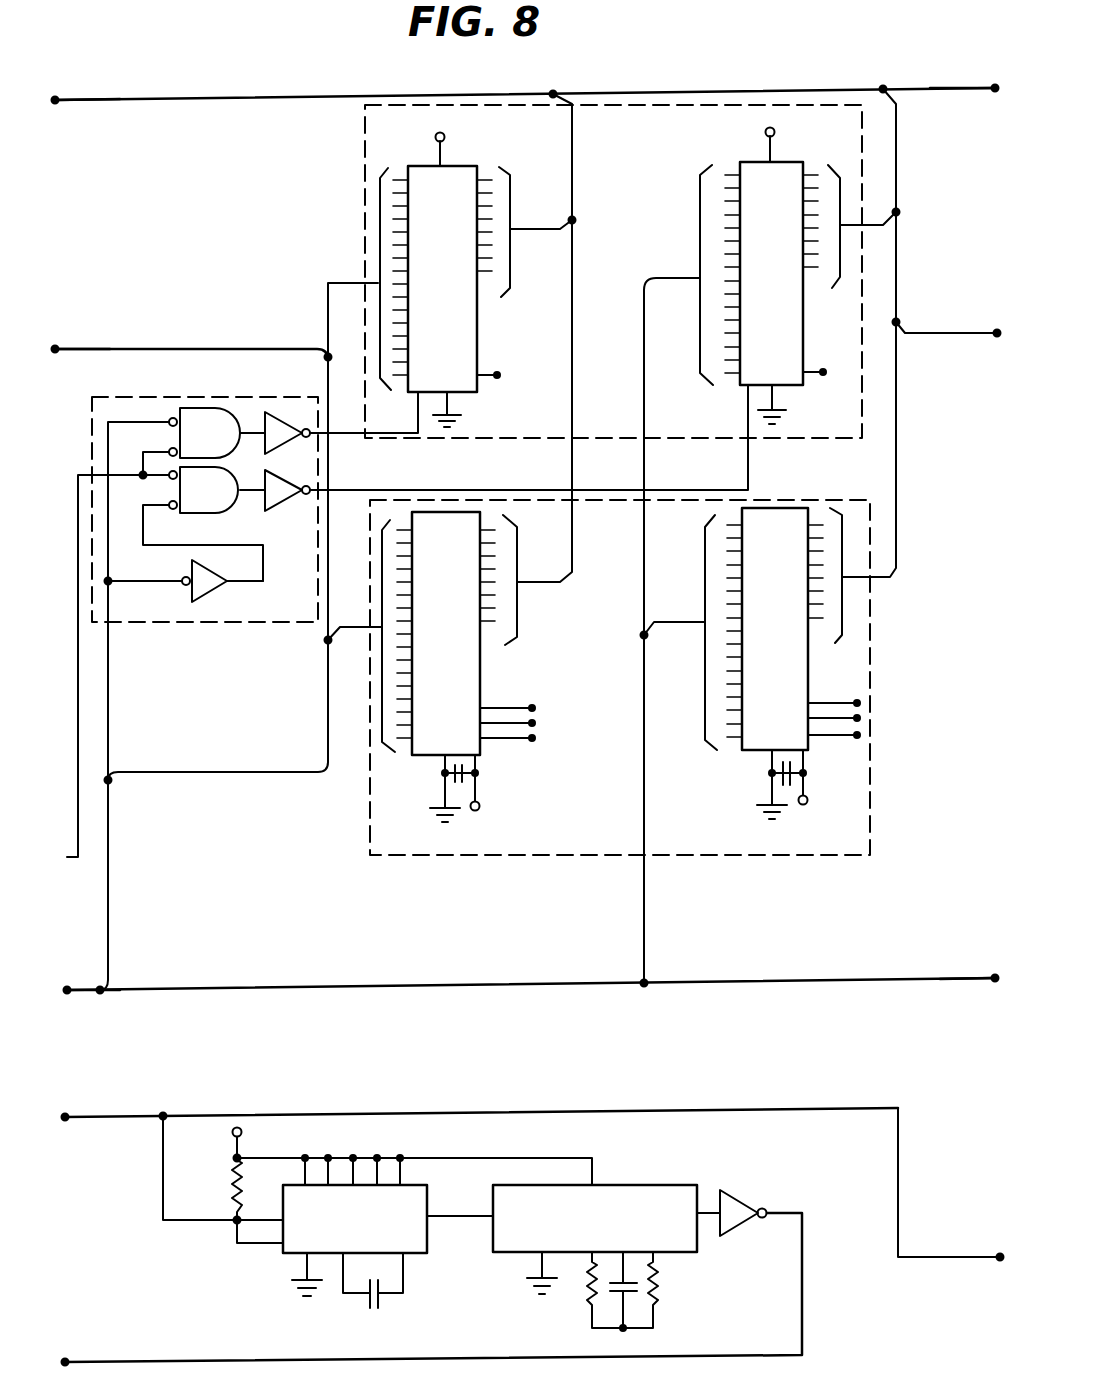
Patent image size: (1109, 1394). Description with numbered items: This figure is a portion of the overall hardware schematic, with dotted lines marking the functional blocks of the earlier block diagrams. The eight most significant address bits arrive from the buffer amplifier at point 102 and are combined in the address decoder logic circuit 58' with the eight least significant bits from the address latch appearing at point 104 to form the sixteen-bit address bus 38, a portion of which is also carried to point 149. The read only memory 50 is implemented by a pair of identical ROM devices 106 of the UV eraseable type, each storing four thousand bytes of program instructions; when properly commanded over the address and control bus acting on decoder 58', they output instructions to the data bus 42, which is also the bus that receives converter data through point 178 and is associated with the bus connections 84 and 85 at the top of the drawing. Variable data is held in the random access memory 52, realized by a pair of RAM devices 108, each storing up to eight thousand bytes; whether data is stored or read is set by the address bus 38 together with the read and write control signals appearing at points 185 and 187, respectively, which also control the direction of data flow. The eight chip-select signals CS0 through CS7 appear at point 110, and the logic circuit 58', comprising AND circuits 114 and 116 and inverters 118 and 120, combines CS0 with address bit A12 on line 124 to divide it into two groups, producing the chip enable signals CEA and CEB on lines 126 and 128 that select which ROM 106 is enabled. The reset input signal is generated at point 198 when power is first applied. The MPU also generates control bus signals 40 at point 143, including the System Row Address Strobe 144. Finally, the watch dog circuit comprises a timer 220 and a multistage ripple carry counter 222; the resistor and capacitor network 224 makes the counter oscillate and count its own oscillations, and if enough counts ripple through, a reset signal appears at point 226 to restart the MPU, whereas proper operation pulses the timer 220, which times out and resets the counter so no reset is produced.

The input line 84 is at (55, 99).
The data bus 42 is at (220, 99).
The output line 85 is at (995, 86).
The read only memory 50 is at (365, 198).
The random access memory 52 is at (370, 833).
The ROM devices 106 is at (480, 307).
The point 198 is at (537, 386).
The point 178 is at (997, 331).
The RAM devices 108 is at (420, 756).
The point 187 is at (553, 688).
The point 185 is at (532, 723).
The point 110 is at (545, 755).
The point 104 is at (55, 349).
The address bus 38 is at (152, 349).
The point 102 is at (67, 990).
The point 149 is at (995, 976).
The logic circuit 58' is at (205, 528).
The AND circuit 116 is at (203, 443).
The AND circuit 114 is at (204, 524).
The line 124 is at (285, 412).
The inverter 120 is at (305, 497).
The inverter 118 is at (208, 592).
The line 128 is at (337, 434).
The line 126 is at (345, 489).
The point 143 is at (65, 1117).
The control bus signals 40 is at (458, 1112).
The System Row Address Strobe 144 is at (1000, 1258).
The point 226 is at (65, 1362).
The timer 220 is at (428, 1240).
The multistage ripple carry counter 222 is at (675, 1252).
The resistor and capacitor network 224 is at (628, 1303).